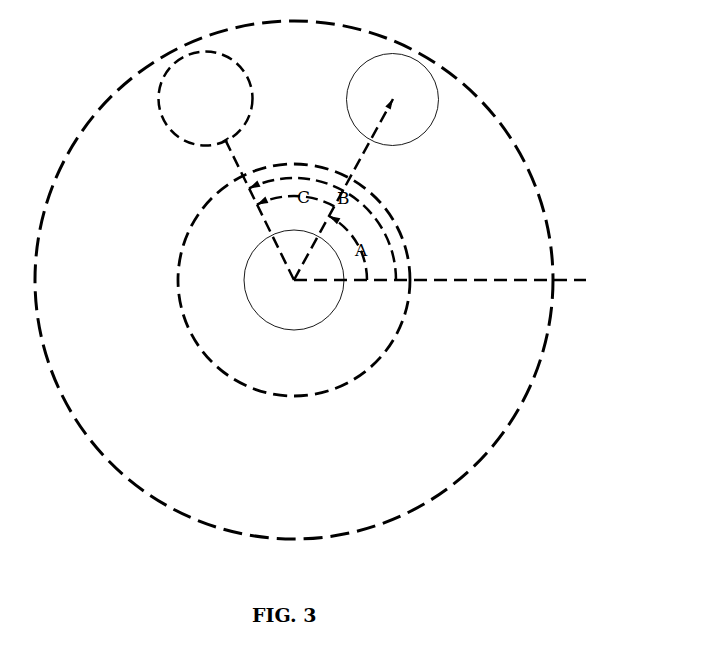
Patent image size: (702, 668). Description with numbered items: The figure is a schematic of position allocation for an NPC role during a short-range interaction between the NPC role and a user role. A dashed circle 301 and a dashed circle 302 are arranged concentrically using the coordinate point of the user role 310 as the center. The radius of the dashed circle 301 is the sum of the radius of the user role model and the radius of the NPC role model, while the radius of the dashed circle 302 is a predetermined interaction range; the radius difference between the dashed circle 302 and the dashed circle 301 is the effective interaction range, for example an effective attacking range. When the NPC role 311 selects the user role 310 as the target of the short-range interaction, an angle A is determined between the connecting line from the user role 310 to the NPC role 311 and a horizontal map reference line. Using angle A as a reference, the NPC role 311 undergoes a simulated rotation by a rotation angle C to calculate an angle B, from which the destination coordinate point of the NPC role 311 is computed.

The dashed circle 301 is at (387, 353).
The dashed circle 302 is at (538, 372).
The user role 310 is at (294, 280).
The NPC role 311 is at (299, 99).